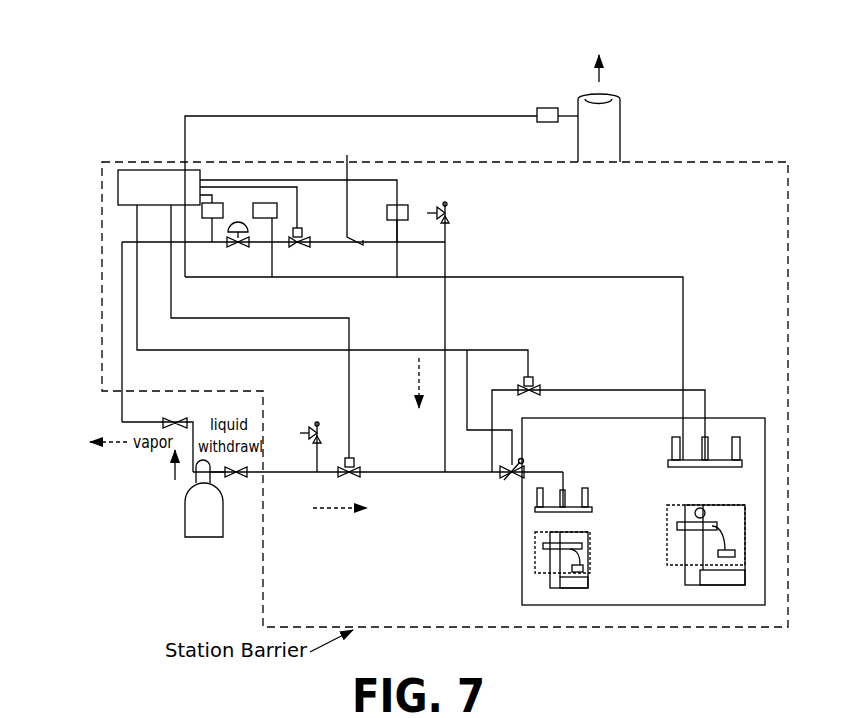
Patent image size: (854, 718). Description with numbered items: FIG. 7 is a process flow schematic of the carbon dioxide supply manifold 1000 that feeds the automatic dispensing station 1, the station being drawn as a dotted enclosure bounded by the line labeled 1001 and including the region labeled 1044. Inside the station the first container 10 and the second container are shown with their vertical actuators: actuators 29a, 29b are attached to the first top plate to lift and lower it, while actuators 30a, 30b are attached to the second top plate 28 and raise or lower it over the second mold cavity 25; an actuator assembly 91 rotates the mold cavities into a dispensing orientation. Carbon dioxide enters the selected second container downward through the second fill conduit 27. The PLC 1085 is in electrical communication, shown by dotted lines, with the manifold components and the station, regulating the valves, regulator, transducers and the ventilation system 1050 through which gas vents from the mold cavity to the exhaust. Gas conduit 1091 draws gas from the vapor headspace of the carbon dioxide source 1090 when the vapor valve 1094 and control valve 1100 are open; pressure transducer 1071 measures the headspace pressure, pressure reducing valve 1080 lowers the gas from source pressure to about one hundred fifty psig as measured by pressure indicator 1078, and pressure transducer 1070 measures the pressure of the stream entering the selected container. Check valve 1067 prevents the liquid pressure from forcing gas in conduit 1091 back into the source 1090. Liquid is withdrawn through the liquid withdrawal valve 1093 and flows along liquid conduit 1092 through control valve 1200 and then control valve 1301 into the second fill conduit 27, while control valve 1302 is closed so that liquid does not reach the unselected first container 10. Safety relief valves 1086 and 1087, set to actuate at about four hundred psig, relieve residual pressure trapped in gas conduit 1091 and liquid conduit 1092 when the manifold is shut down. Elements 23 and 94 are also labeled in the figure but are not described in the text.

The automatic dispensing station 1 is at (722, 368).
The first container 10 is at (592, 552).
The first nozzle manifold 23 is at (566, 498).
The second mold cavity 25 is at (752, 540).
The second fill conduit 27 is at (707, 445).
The second top plate 28 is at (733, 468).
The vertical actuator 29a is at (536, 496).
The vertical actuator 29b is at (589, 493).
The vertical actuator 30a is at (671, 446).
The vertical actuator 30b is at (741, 443).
The actuator assembly 91 is at (718, 593).
The electronic device 94 is at (701, 505).
The CO2 supply manifold 1000 is at (417, 80).
The station barrier 1001 is at (795, 343).
The control area 1044 is at (675, 230).
The ventilation system 1050 is at (607, 128).
The check valve 1067 is at (357, 201).
The pressure transducer 1070 is at (402, 207).
The pressure transducer 1071 is at (220, 203).
The pressure indicator 1078 is at (265, 203).
The pressure reducing valve 1080 is at (238, 222).
The PLC 1085 is at (118, 185).
The safety relief valve 1086 is at (502, 327).
The safety relief valve 1087 is at (310, 406).
The CO2 source 1090 is at (205, 517).
The gas conduit 1091 is at (450, 327).
The liquid conduit 1092 is at (468, 474).
The CO2 liquid withdrawal valve 1093 is at (240, 483).
The CO2 vapor valve 1094 is at (165, 418).
The CO2 control valve 1100 is at (307, 237).
The CO2 control valve 1200 is at (357, 465).
The control valve 1301 is at (522, 388).
The control valve 1302 is at (520, 462).